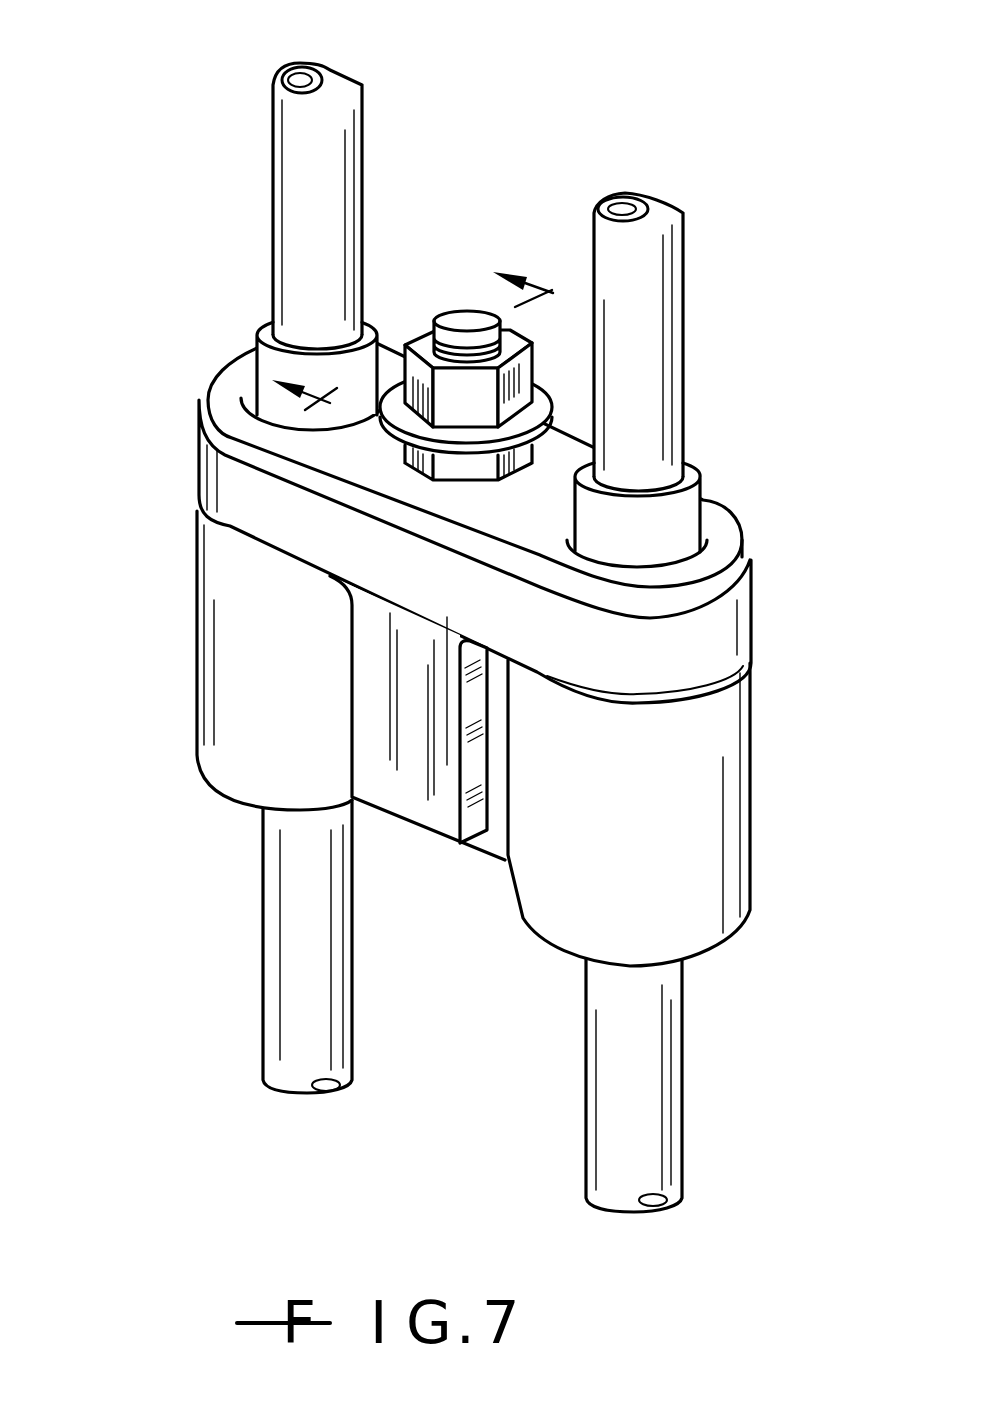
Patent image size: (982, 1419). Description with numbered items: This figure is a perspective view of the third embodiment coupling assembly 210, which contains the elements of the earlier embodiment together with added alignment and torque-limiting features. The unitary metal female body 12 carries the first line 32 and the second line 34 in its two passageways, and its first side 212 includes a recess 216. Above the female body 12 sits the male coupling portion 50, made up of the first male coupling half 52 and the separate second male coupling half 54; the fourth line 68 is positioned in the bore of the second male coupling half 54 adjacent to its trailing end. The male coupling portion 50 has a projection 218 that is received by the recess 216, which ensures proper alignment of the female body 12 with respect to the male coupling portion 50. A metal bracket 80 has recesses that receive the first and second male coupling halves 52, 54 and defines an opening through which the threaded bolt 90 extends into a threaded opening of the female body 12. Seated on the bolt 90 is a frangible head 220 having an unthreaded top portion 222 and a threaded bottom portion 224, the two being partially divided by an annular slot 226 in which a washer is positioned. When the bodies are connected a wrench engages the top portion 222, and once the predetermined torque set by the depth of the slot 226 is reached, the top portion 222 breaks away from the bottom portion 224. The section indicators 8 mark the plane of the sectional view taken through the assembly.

The coupling assembly 210 is at (453, 609).
The fourth line 68 is at (273, 120).
The second line 34 is at (262, 1052).
The unthreaded top portion 222 is at (527, 335).
The first line 32 is at (682, 1093).
The second male coupling half 54 is at (255, 332).
The first male coupling half 52 is at (698, 478).
The bracket 80 is at (740, 527).
The male coupling portion 50 is at (205, 468).
The threaded bolt 90 is at (458, 312).
The frangible head 220 is at (425, 343).
The annular slot 226 is at (410, 414).
The threaded bottom portion 224 is at (470, 467).
The female body 12 is at (213, 750).
The first side 212 is at (543, 908).
The projection 218 is at (383, 683).
The recess 216 is at (487, 843).
The section line 8- 8 is at (379, 320).